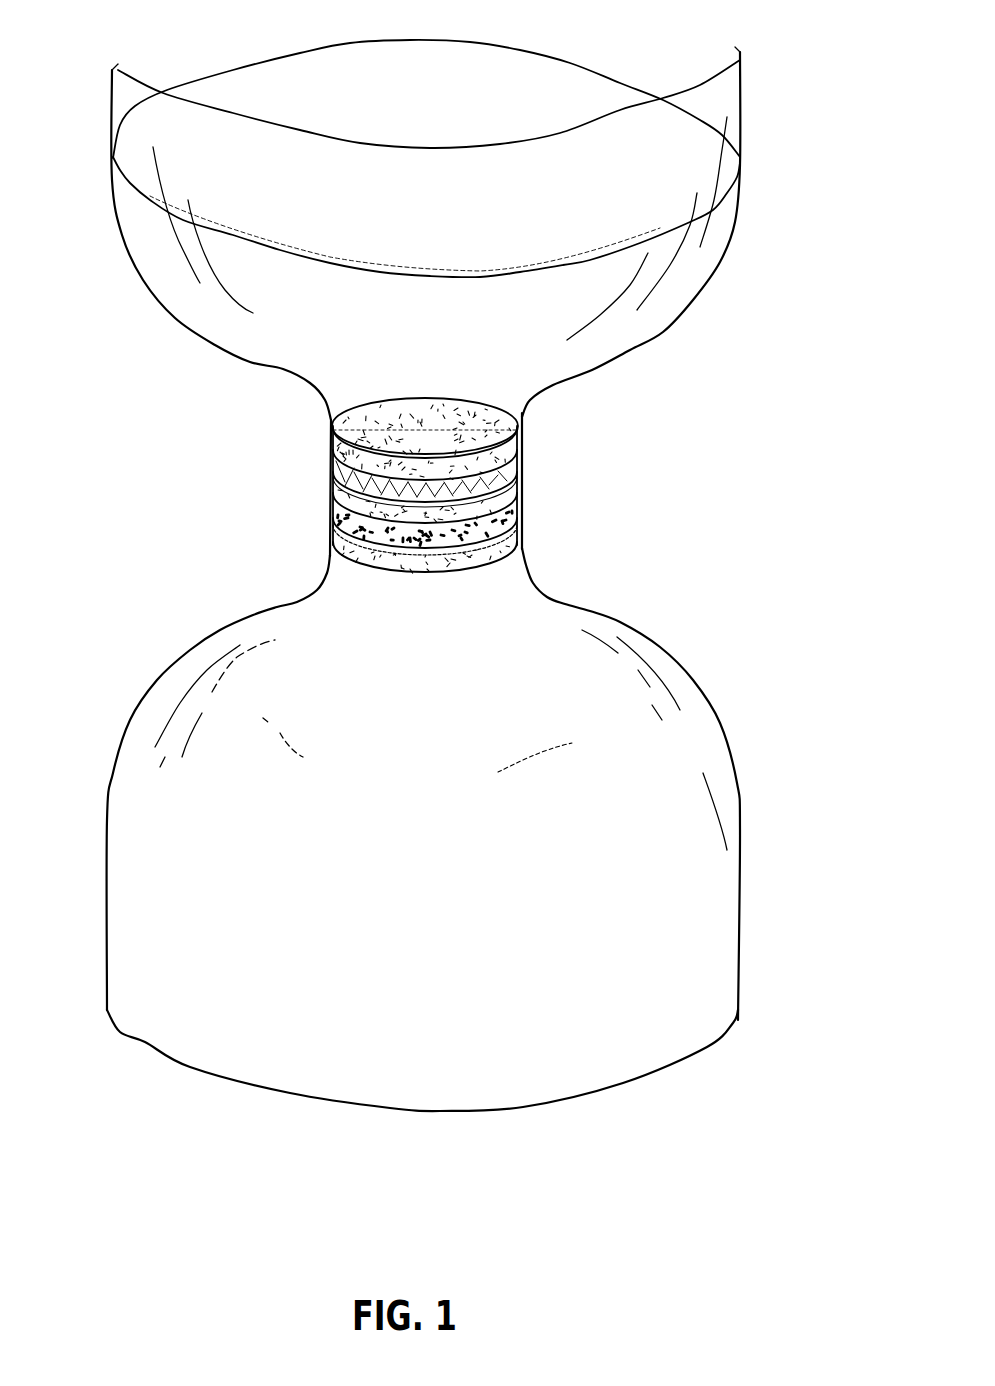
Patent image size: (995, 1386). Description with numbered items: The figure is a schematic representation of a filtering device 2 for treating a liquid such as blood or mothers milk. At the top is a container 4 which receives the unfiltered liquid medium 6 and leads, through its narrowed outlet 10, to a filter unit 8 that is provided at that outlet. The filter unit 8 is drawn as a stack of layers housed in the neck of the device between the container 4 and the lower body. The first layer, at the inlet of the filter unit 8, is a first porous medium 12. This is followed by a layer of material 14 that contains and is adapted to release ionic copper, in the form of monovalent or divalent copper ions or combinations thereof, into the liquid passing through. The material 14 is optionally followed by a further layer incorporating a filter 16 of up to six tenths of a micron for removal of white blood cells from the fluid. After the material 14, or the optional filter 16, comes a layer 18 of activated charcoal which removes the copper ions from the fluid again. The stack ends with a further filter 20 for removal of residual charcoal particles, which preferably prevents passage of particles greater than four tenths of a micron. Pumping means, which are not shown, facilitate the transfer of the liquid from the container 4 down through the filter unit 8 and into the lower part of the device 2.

The device 2 is at (168, 523).
The container 4 is at (116, 93).
The unfiltered liquid medium 6 is at (573, 92).
The filter unit 8 is at (525, 548).
The outlet 10 is at (525, 415).
The first porous medium 12 is at (363, 427).
The material containing ionic copper 14 is at (330, 477).
The filter 16 is at (525, 490).
The layer of activated charcoal 18 is at (330, 516).
The further filter 20 is at (330, 547).